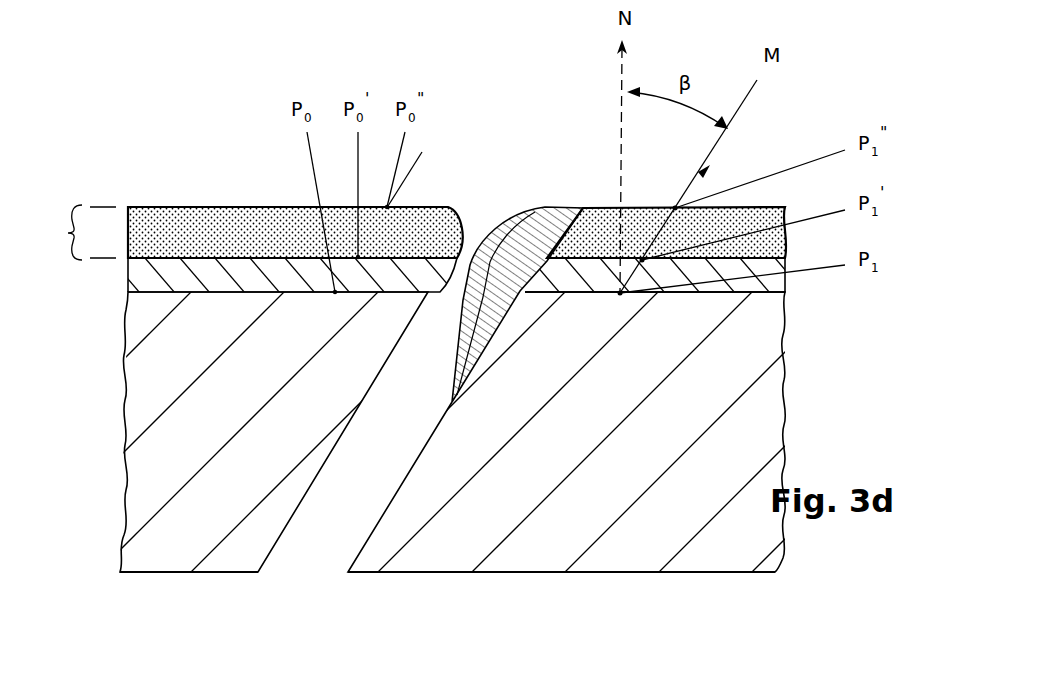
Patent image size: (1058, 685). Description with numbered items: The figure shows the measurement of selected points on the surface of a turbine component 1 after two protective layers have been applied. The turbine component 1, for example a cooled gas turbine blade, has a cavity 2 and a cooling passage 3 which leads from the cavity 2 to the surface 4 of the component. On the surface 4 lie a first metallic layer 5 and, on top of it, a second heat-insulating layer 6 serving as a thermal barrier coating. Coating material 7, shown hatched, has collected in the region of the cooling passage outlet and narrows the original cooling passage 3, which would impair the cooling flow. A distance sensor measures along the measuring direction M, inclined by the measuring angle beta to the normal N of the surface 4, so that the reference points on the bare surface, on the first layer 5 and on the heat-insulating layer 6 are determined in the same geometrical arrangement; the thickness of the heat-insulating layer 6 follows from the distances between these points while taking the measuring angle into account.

The turbine component 1 is at (597, 452).
The cavity 2 is at (561, 639).
The cooling passage 3 is at (372, 452).
The surface 4 is at (588, 292).
The first metallic layer 5 is at (243, 275).
The second heat-insulating layer 6 is at (169, 232).
The coating material 7 is at (466, 250).